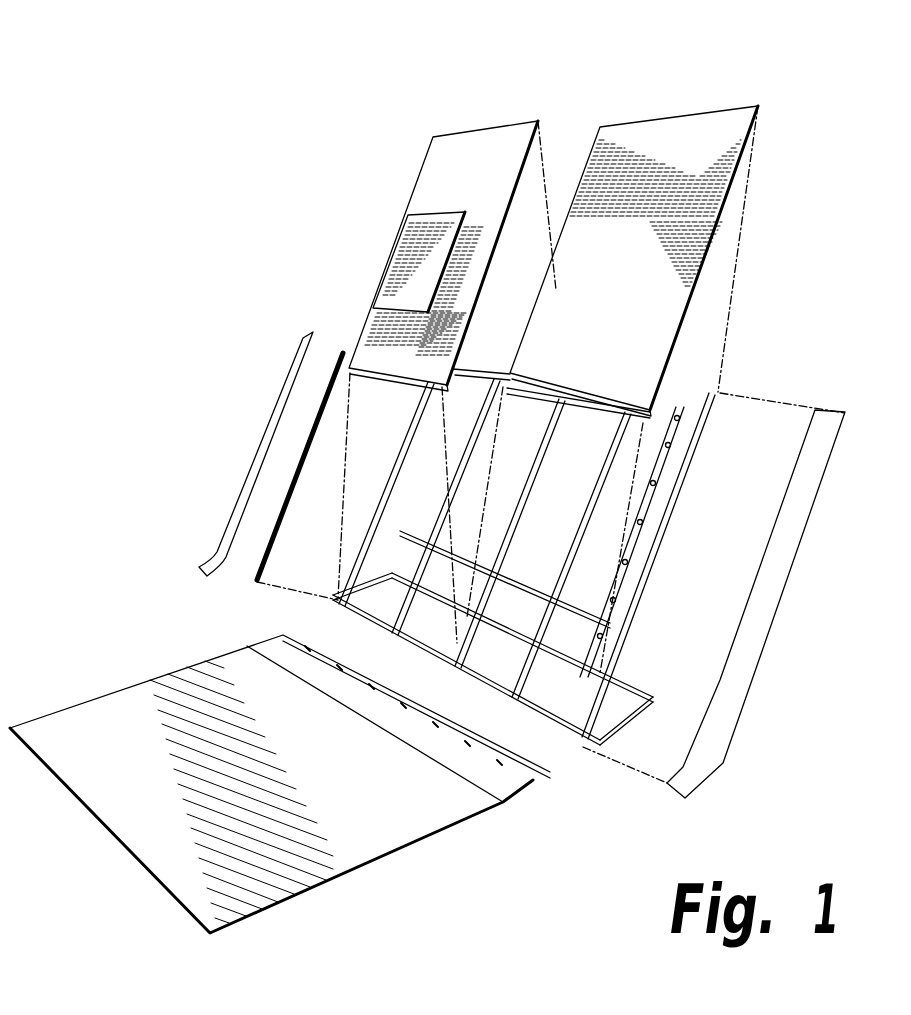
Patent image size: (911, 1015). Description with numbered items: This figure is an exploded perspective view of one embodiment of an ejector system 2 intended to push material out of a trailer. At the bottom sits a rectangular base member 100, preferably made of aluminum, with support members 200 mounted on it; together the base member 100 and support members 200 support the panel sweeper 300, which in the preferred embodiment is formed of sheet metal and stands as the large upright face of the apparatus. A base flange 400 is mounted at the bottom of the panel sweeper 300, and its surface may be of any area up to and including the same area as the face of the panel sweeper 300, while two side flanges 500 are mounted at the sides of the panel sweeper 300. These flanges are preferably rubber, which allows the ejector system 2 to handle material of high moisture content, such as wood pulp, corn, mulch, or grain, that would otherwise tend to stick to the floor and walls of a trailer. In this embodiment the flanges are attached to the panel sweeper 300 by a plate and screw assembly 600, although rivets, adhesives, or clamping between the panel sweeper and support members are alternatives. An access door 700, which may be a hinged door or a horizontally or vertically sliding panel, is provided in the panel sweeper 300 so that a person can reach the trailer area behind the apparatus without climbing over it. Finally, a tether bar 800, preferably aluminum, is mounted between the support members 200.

The ejector system 2 is at (233, 135).
The rectangular base member 100 is at (624, 728).
The support members 200 is at (647, 683).
The panel sweeper 300 is at (634, 146).
The base flange 400 is at (357, 832).
The side flanges 500 is at (273, 418).
The plate and screw assembly 600 is at (310, 637).
The access door 700 is at (398, 265).
The tether bar 800 is at (527, 567).